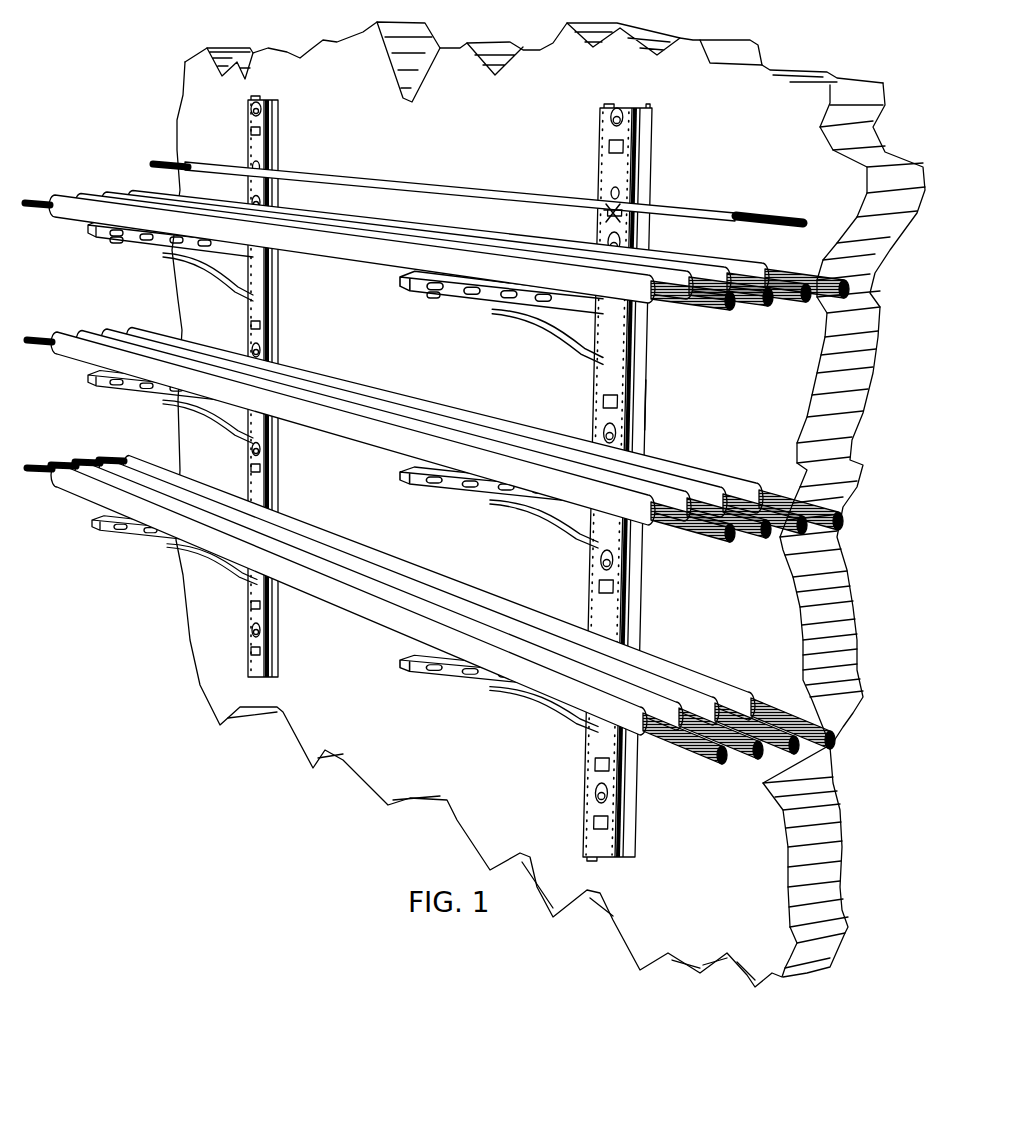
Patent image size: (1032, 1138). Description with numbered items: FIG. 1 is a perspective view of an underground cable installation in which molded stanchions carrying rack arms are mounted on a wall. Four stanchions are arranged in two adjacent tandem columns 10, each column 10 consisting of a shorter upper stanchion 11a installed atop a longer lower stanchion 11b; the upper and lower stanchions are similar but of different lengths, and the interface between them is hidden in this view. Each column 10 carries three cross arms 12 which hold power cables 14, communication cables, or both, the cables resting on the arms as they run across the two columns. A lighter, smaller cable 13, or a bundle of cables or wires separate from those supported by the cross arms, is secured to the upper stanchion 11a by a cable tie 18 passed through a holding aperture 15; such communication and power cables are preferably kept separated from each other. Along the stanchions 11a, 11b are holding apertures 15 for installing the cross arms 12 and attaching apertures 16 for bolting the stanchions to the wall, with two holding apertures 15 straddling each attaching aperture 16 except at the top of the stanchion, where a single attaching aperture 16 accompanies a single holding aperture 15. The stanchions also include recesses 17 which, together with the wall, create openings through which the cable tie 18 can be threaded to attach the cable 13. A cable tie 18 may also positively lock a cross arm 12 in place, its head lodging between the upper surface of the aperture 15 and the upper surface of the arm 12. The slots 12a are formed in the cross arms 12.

The tandem column 10 is at (384, 465).
The upper stanchion 11a is at (280, 165).
The lower stanchion 11b is at (280, 462).
The cross arm 12 is at (236, 278).
The bracket slot 12a is at (90, 235).
The cable 13 is at (478, 192).
The power cable 14 is at (656, 302).
The holding aperture 15 is at (607, 142).
The attaching aperture 16 is at (612, 104).
The recess 17 is at (655, 403).
The cable tie 18 is at (610, 206).